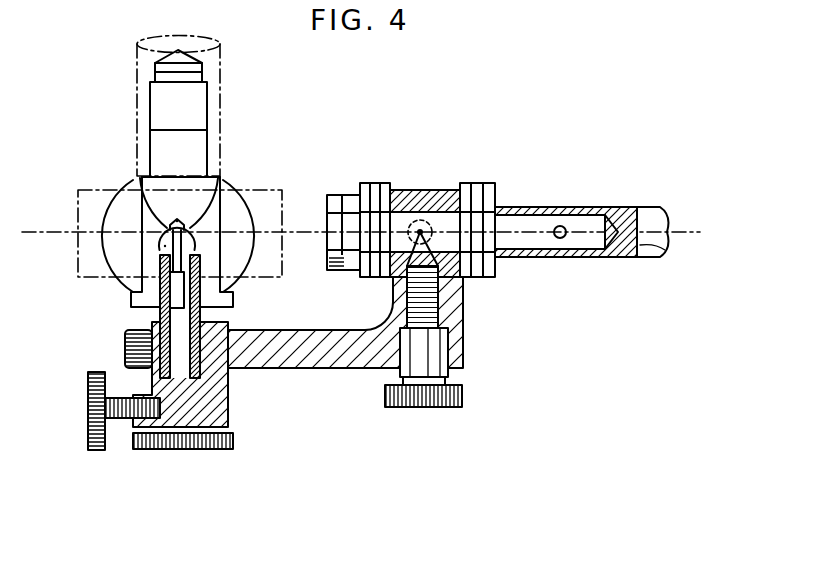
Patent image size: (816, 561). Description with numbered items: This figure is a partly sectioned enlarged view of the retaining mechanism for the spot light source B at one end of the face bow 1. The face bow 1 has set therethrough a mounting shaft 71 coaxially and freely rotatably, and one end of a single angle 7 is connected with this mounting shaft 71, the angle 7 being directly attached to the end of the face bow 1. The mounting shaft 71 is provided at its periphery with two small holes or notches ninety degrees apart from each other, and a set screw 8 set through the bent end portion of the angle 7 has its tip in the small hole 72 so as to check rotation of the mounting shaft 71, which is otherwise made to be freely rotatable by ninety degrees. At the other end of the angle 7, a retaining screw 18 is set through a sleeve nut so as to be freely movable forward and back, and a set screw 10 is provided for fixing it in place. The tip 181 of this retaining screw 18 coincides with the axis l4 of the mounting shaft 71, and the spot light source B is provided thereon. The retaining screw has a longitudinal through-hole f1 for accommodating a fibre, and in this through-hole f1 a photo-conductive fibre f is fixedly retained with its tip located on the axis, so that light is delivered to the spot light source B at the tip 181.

The face bow 1 is at (575, 207).
The angle 7 is at (282, 356).
The set screw 8 is at (423, 317).
The set screw 10 is at (88, 411).
The retaining screw 18 is at (177, 417).
The mounting shaft 71 is at (375, 217).
The small hole 72 is at (423, 234).
The tip of retaining screw 181 is at (172, 222).
The spot light source B is at (205, 188).
The photo-conductive fibre f is at (158, 259).
The through-hole f1 is at (162, 247).
The axis of mounting shaft l4 is at (680, 228).